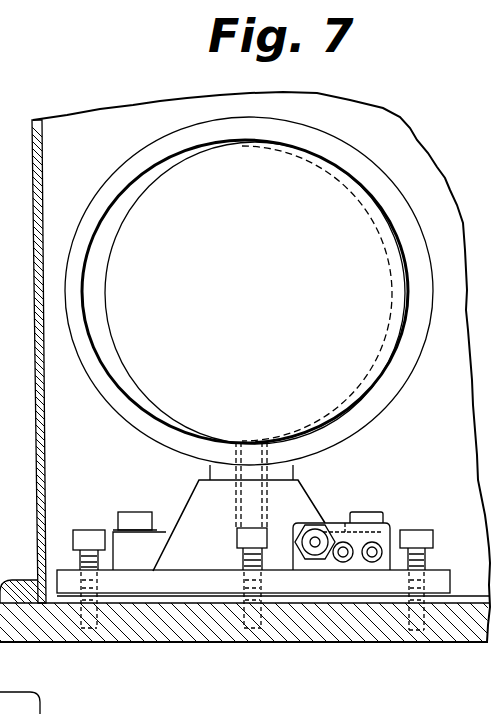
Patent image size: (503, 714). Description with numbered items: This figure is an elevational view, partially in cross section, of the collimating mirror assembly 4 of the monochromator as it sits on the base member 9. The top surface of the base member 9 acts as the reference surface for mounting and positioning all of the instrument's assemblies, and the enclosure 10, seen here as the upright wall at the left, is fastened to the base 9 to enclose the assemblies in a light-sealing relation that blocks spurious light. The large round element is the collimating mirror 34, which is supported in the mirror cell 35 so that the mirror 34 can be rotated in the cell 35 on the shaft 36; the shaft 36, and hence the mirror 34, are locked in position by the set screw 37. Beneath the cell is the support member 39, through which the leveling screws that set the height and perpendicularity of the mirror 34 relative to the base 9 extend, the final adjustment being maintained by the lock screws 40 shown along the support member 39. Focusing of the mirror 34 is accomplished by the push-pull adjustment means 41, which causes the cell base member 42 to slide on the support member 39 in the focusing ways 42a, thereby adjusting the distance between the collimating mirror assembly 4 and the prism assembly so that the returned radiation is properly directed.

The collimating mirror assembly 4 is at (416, 396).
The base member 9 is at (170, 630).
The enclosure 10 is at (34, 317).
The collimating mirror 34 is at (336, 181).
The mirror cell 35 is at (122, 170).
The shaft 36 is at (296, 471).
The set screw 37 is at (207, 497).
The support member 39 is at (442, 575).
The lock screws 40 is at (90, 534).
The push-pull adjustment means 41 is at (316, 538).
The cell base member 42 is at (306, 492).
The focusing ways 42a is at (168, 524).